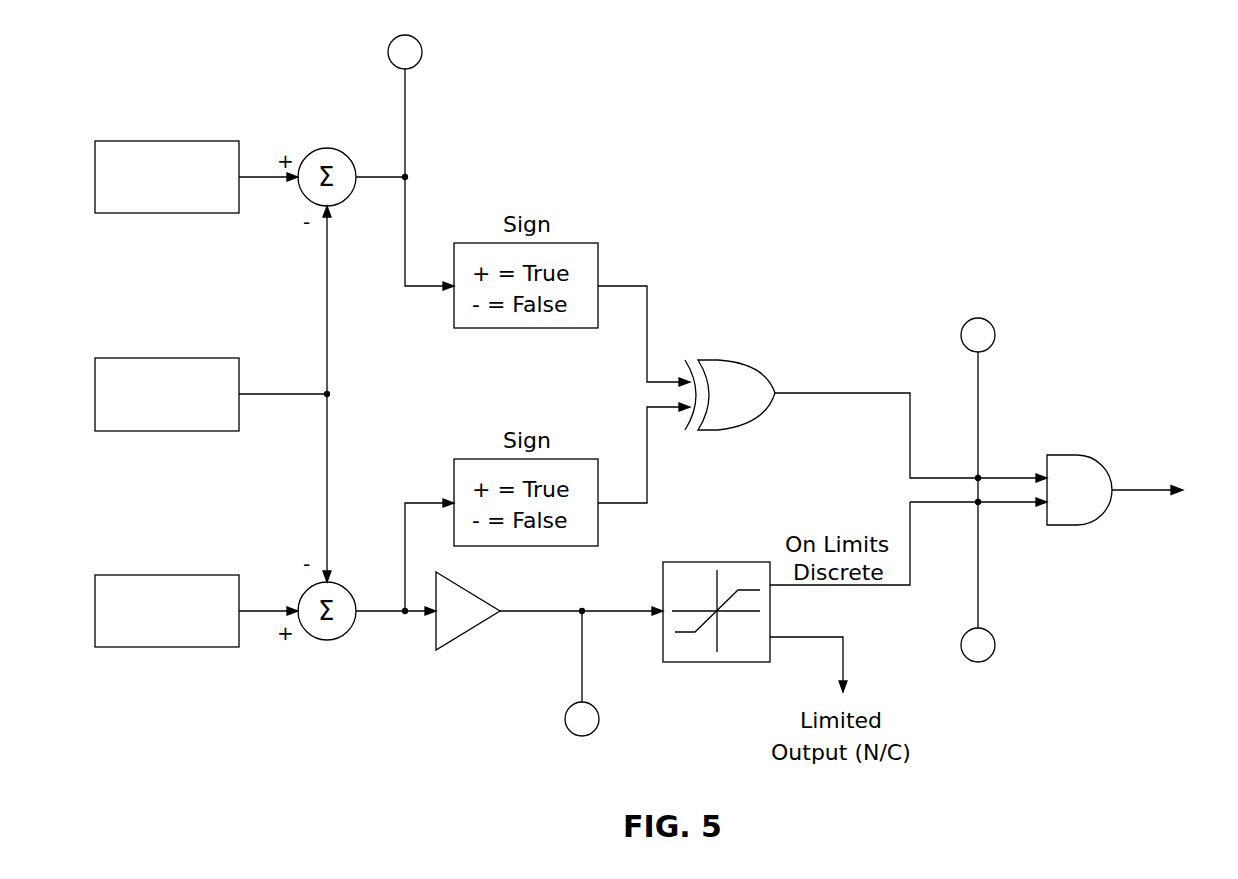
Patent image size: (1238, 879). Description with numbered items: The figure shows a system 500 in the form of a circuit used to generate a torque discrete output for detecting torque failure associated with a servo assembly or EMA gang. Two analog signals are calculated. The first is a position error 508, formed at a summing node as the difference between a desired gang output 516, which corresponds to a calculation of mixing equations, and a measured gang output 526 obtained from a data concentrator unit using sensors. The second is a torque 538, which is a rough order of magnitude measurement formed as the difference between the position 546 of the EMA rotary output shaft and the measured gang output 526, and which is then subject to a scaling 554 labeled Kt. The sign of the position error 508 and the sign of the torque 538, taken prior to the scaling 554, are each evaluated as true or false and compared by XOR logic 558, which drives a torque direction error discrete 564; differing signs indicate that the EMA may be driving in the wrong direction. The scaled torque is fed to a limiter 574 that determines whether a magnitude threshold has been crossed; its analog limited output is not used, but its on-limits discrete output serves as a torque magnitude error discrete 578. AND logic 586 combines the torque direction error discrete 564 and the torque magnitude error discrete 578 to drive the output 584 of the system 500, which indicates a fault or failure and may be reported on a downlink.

The system 500 is at (963, 101).
The position error 508 is at (398, 38).
The desired gang output 516 is at (164, 141).
The measured gang output 526 is at (164, 358).
The torque 538 is at (580, 736).
The position of the EMA rotary output shaft 546 is at (164, 575).
The scaling 554 is at (437, 630).
The XOR logic 558 is at (720, 360).
The torque direction error discrete 564 is at (982, 318).
The limiter 574 is at (700, 562).
The torque magnitude error discrete 578 is at (984, 661).
The output 584 is at (1146, 488).
The AND logic 586 is at (1062, 455).